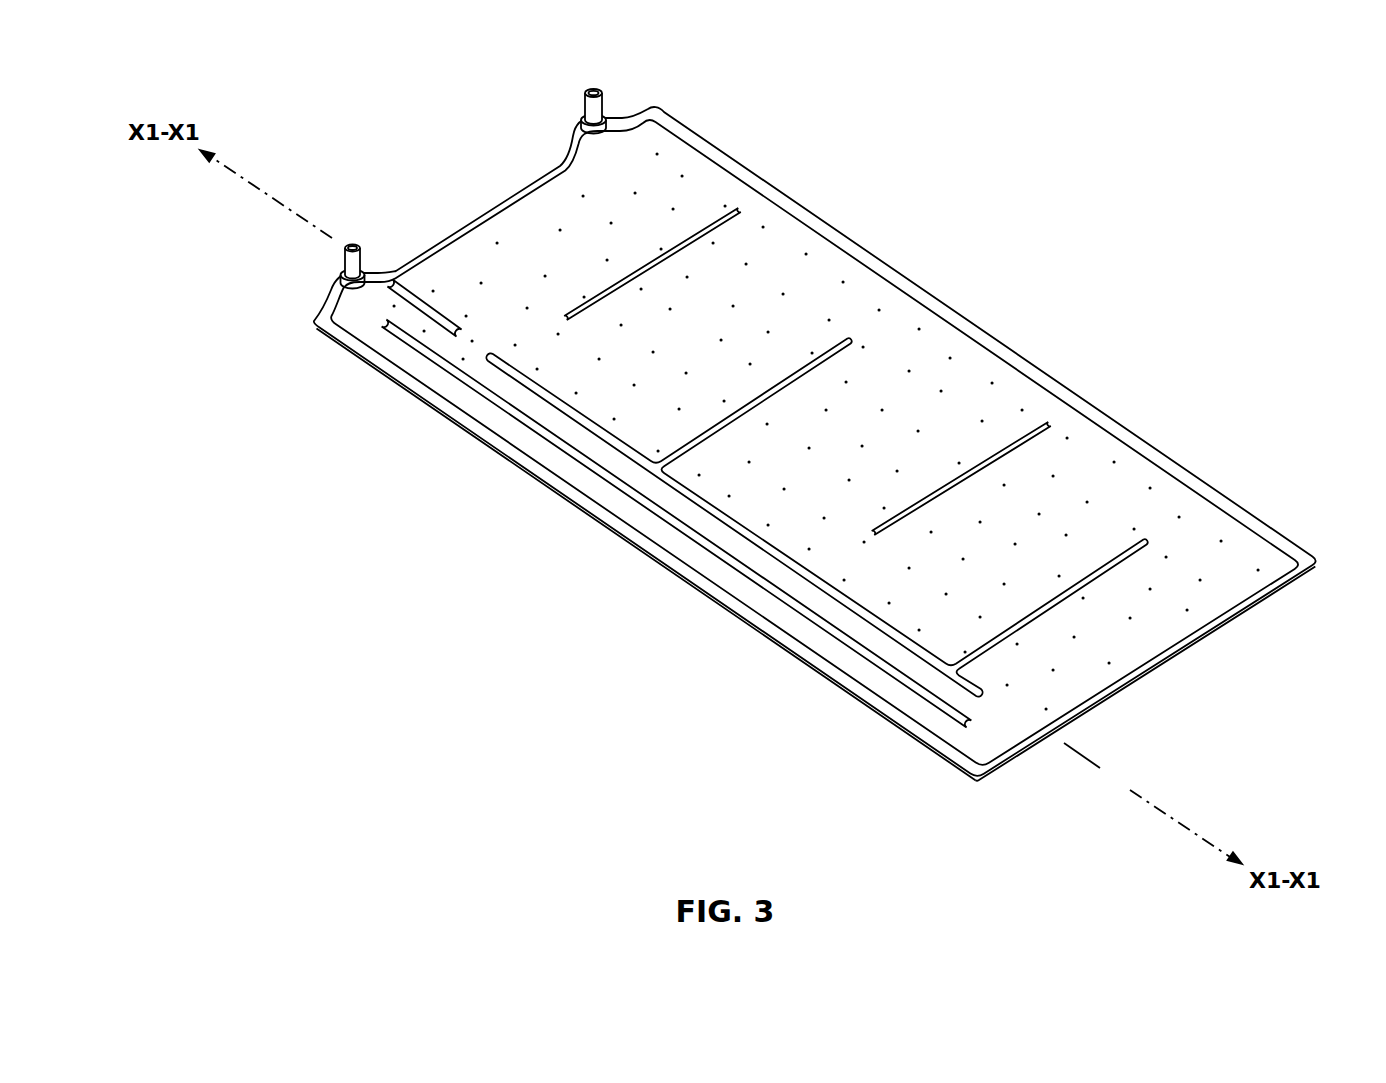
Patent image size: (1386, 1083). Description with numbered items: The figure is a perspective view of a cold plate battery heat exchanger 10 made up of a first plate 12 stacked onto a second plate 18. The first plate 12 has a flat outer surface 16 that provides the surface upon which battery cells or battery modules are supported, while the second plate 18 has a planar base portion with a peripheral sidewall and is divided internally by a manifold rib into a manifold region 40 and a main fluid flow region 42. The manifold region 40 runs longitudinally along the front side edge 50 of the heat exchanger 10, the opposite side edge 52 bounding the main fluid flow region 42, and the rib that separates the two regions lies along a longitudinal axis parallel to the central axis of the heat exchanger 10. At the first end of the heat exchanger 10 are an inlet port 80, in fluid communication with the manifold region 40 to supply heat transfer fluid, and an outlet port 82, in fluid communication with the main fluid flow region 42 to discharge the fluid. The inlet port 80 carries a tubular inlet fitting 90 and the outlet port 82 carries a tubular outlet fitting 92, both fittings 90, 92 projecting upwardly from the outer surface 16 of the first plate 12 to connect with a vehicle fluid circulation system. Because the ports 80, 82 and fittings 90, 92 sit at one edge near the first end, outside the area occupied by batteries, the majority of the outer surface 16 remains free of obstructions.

The heat exchanger 10 is at (815, 444).
The first plate 12 is at (1222, 518).
The outer surface 16 is at (870, 449).
The second plate 18 is at (1190, 650).
The manifold region 40 is at (730, 564).
The main fluid flow region 42 is at (1053, 492).
The side edge 50 is at (614, 543).
The side edge 52 is at (992, 327).
The inlet port 80 is at (367, 272).
The outlet port 82 is at (607, 118).
The tubular inlet fitting 90 is at (336, 246).
The tubular outlet fitting 92 is at (583, 98).